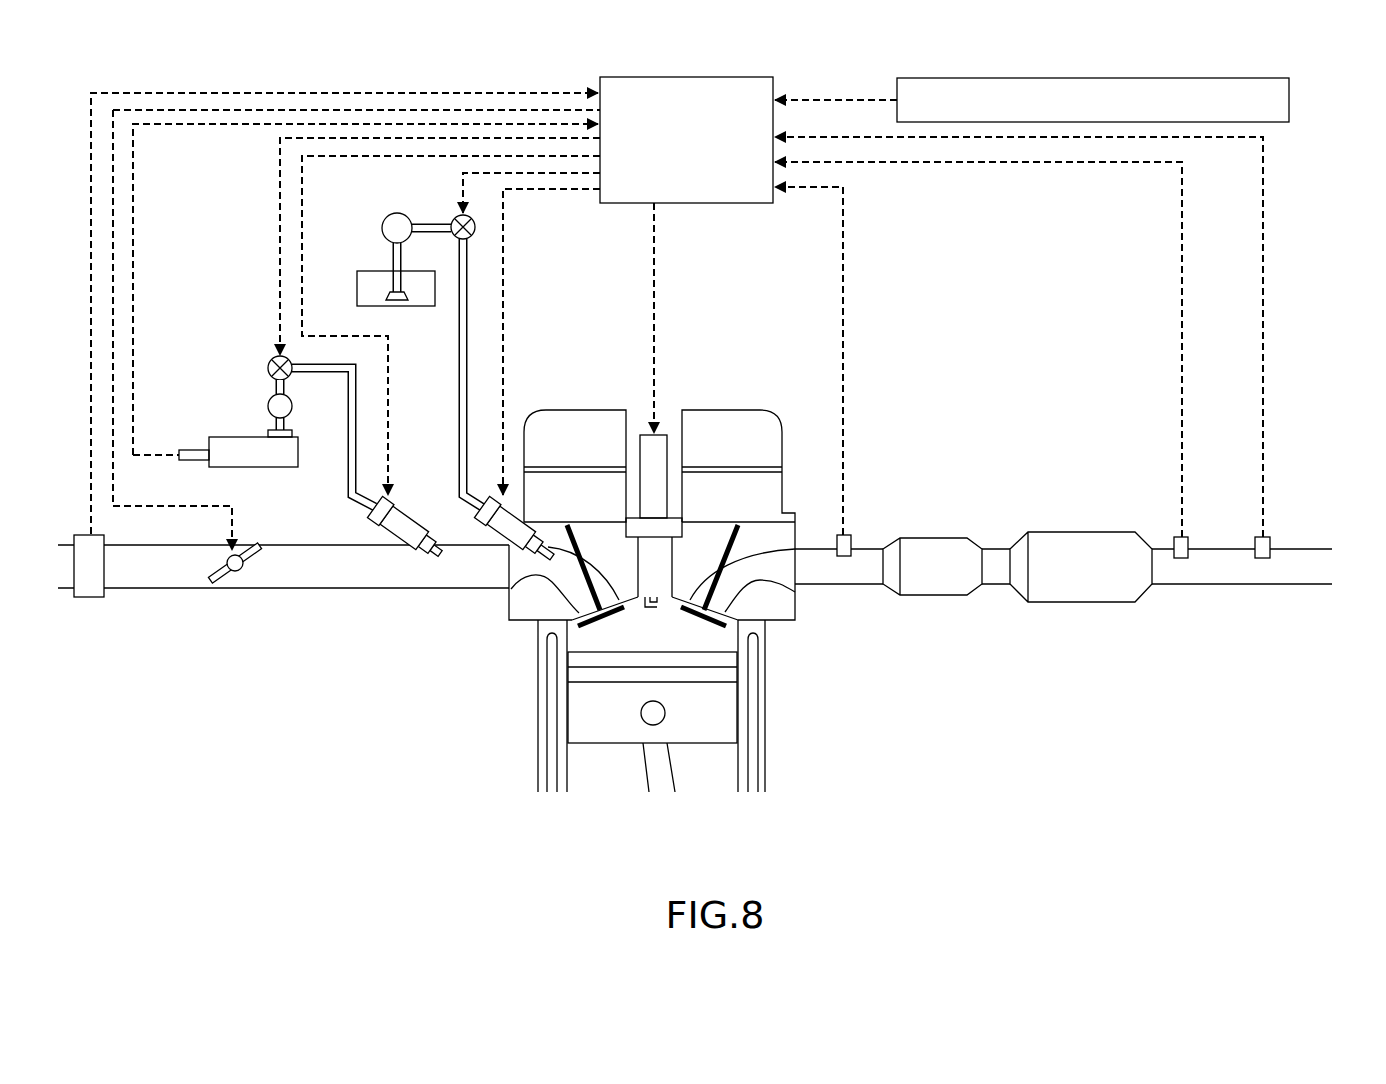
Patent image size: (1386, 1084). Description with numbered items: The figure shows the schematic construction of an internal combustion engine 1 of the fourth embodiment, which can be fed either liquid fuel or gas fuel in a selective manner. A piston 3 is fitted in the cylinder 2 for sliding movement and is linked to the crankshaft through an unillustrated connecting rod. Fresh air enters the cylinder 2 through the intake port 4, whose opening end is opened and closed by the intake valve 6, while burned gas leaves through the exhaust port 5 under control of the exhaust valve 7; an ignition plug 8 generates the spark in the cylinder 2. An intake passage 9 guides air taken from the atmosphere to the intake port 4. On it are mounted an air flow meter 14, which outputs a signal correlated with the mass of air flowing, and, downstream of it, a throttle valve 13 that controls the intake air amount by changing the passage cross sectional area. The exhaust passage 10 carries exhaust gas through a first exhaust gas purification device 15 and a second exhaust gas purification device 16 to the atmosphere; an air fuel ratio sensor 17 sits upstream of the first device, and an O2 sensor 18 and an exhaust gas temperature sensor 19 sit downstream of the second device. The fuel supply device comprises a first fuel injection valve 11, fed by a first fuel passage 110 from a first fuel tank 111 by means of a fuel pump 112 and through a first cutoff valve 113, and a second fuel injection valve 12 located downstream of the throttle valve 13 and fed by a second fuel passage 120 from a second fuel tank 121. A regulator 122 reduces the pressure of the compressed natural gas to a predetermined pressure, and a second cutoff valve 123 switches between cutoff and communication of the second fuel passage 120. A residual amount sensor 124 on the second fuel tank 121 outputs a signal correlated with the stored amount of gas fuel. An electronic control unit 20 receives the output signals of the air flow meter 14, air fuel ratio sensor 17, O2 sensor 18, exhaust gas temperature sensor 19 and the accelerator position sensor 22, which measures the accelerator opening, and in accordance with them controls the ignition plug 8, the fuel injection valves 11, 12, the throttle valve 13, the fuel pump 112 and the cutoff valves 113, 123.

The internal combustion engine 1 is at (709, 598).
The cylinder 2 is at (567, 762).
The piston 3 is at (703, 728).
The intake port 4 is at (530, 598).
The exhaust port 5 is at (776, 590).
The intake valve 6 is at (603, 597).
The exhaust valve 7 is at (703, 597).
The ignition plug 8 is at (664, 448).
The intake passage 9 is at (330, 590).
The exhaust passage 10 is at (850, 587).
The first fuel injection valve 11 is at (490, 540).
The second fuel injection valve 12 is at (406, 500).
The throttle valve 13 is at (217, 588).
The air flow meter 14 is at (87, 598).
The first exhaust gas purification device 15 is at (933, 540).
The second exhaust gas purification device 16 is at (1065, 535).
The air fuel ratio sensor 17 is at (853, 531).
The O2 sensor 18 is at (1190, 532).
The exhaust gas temperature sensor 19 is at (1272, 532).
The electronic control unit (ECU) 20 is at (717, 205).
The accelerator position sensor 22 is at (1290, 103).
The first fuel passage 110 is at (459, 326).
The first fuel tank 111 is at (381, 272).
The fuel pump 112 is at (386, 225).
The first cutoff valve 113 is at (454, 220).
The second fuel passage 120 is at (348, 470).
The second fuel tank 121 is at (240, 437).
The regulator 122 is at (270, 406).
The second cutoff valve 123 is at (273, 357).
The residual amount sensor 124 is at (193, 462).